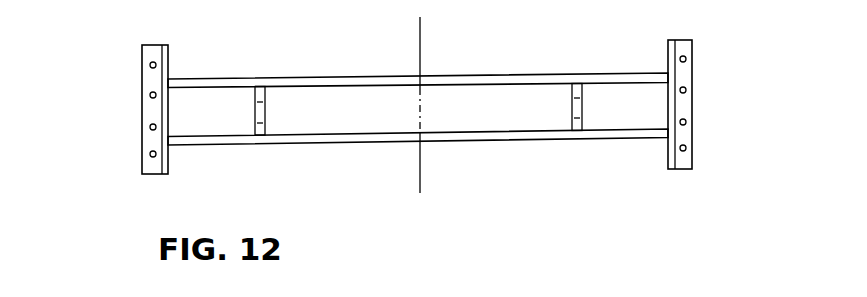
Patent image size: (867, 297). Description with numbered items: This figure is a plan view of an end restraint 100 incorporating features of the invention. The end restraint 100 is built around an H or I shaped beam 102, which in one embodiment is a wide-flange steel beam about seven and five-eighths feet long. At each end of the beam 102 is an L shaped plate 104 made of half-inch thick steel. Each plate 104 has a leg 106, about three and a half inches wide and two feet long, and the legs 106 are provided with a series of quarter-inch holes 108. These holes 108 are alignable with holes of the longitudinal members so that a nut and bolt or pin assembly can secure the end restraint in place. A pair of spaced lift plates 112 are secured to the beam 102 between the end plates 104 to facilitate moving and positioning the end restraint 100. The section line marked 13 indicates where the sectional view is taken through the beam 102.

The end restraint 100 is at (597, 40).
The beam 102 is at (503, 77).
The L shaped plate 104 is at (417, 131).
The leg 106 is at (143, 82).
The hole 108 is at (418, 106).
The lift plate 112 is at (266, 128).
The section line 13- 13 is at (383, 31).